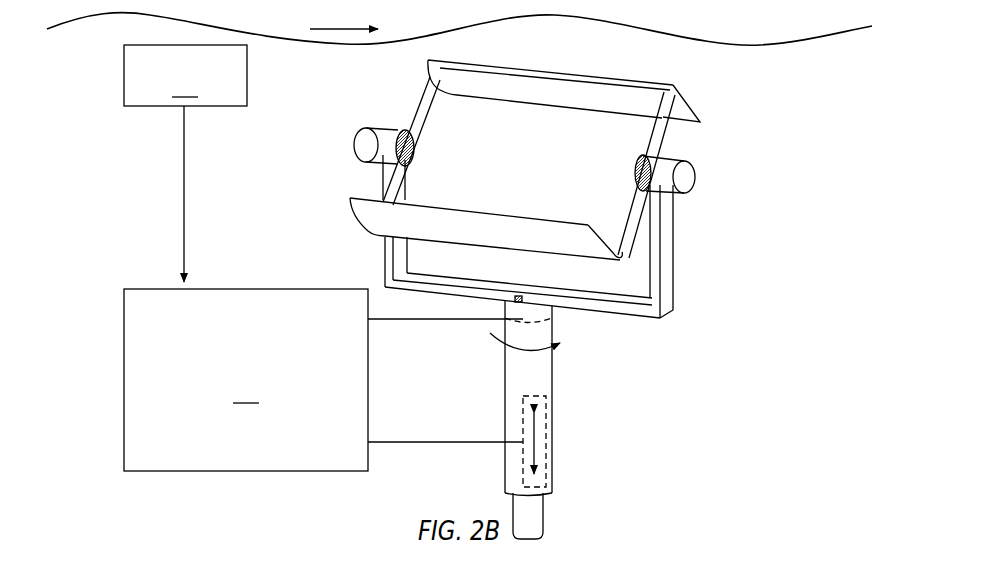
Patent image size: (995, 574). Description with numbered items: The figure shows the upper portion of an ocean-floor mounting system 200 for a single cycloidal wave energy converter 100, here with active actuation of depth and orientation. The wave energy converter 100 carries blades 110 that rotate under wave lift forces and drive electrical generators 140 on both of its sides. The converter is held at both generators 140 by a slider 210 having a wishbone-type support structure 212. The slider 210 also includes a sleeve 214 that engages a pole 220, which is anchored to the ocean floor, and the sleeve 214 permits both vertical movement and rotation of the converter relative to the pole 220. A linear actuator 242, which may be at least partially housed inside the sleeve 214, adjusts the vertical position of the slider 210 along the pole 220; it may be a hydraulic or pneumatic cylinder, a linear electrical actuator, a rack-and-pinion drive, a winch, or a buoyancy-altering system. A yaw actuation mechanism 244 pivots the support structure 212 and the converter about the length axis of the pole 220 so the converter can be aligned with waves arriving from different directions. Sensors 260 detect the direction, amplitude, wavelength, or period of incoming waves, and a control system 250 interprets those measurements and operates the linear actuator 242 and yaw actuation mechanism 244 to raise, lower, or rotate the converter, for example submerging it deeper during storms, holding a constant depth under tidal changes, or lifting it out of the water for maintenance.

The cycloidal wave energy converter 100 is at (742, 112).
The blades 110 is at (588, 74).
The electrical generators 140 is at (353, 145).
The ocean-floor mounting system 200 is at (332, 506).
The slider 210 is at (678, 388).
The support structure 212 is at (665, 265).
The sleeve 214 is at (510, 364).
The pole 220 is at (546, 517).
The linear actuator 242 is at (543, 450).
The yaw actuation mechanism 244 is at (552, 322).
The control system 250 is at (246, 380).
The sensors 260 is at (185, 163).